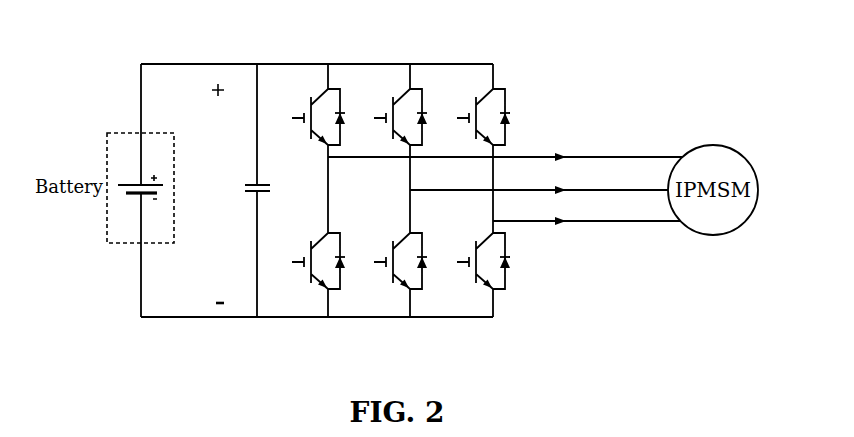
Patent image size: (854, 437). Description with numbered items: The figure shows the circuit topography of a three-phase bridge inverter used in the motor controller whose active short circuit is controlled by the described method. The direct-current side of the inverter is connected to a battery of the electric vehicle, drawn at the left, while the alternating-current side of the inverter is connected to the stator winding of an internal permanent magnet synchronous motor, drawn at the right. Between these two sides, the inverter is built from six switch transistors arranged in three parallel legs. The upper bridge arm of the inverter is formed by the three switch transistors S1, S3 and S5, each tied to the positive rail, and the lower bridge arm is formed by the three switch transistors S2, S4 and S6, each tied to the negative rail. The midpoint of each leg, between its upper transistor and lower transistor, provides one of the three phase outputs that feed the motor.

The switch transistor S1 is at (307, 117).
The switch transistor S2 is at (307, 261).
The switch transistor S3 is at (390, 117).
The switch transistor S4 is at (390, 261).
The switch transistor S5 is at (473, 117).
The switch transistor S6 is at (473, 261).